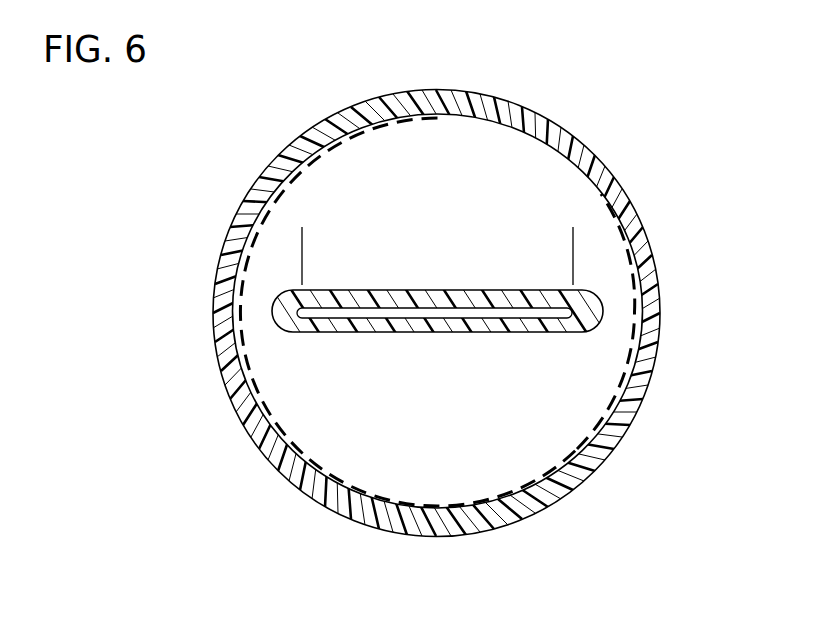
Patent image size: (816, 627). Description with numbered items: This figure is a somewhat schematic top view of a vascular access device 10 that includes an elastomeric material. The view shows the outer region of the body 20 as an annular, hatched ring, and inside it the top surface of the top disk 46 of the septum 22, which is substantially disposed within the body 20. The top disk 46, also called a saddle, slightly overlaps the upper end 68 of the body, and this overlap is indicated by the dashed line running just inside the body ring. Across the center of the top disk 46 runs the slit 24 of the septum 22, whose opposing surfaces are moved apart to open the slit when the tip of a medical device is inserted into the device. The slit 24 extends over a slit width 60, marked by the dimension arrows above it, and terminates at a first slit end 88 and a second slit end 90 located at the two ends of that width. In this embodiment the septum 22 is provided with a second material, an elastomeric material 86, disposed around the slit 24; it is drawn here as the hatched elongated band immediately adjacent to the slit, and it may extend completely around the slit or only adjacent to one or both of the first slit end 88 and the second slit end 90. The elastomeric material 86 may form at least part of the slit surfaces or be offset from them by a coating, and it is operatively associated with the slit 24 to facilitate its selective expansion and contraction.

The vascular access device 10 is at (193, 130).
The body 20 is at (222, 237).
The septum 22 is at (528, 215).
The slit 24 is at (418, 314).
The top disk 46 is at (565, 430).
The slit width 60 is at (572, 234).
The upper end 68 is at (638, 299).
The elastomeric material 86 is at (278, 309).
The first slit end 88 is at (298, 318).
The second slit end 90 is at (570, 314).